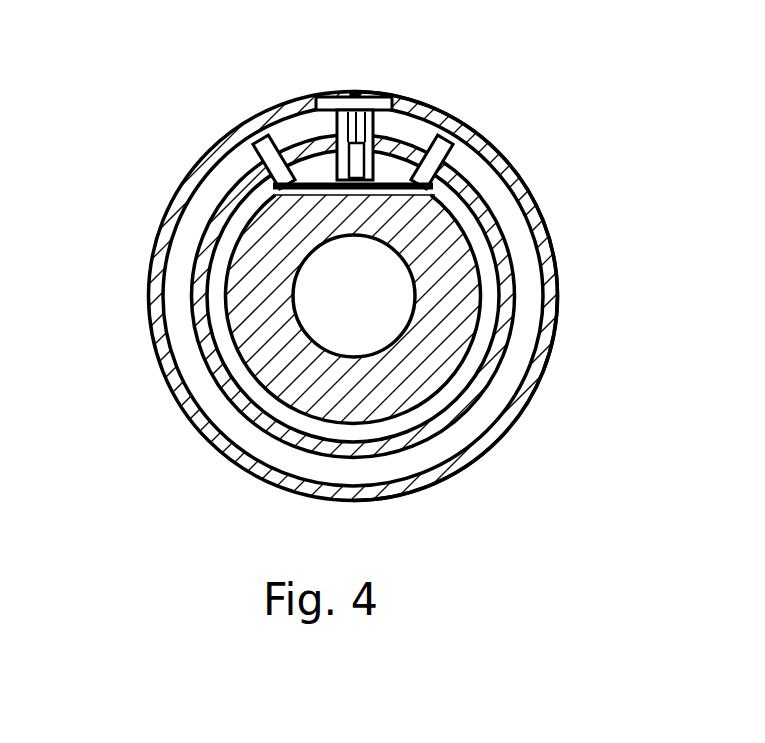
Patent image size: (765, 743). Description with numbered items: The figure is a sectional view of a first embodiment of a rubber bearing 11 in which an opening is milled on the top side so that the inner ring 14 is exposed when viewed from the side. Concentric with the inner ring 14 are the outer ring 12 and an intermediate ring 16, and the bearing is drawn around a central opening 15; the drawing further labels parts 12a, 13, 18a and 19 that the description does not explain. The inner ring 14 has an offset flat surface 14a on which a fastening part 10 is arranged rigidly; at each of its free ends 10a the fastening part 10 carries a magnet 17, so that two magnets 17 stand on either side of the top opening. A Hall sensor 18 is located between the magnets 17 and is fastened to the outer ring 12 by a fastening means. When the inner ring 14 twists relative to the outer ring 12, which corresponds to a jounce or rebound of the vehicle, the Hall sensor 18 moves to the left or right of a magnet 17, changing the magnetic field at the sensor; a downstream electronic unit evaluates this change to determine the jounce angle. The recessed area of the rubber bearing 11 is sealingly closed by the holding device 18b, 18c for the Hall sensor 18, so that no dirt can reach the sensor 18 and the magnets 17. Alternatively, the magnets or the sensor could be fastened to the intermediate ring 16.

The fastening part 10 is at (200, 210).
The free end of fastening part 10a is at (250, 168).
The rubber bearing 11 is at (473, 457).
The outer ring 12 is at (538, 366).
The cover plate 12a is at (312, 98).
The reinforcing layer 13 is at (562, 310).
The inner ring 14 is at (462, 280).
The offset flat surface 14a is at (470, 197).
The central channel 15 is at (354, 296).
The intermediate ring 16 is at (493, 393).
The magnet 17 is at (262, 143).
The Hall sensor 18 is at (337, 150).
The sensor head 18a is at (322, 100).
The holding device 18b is at (334, 104).
The holding device 18c is at (368, 122).
The base plate 19 is at (397, 162).